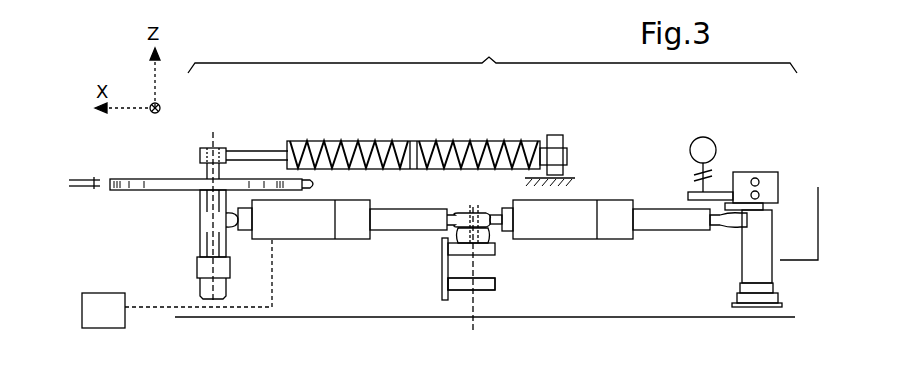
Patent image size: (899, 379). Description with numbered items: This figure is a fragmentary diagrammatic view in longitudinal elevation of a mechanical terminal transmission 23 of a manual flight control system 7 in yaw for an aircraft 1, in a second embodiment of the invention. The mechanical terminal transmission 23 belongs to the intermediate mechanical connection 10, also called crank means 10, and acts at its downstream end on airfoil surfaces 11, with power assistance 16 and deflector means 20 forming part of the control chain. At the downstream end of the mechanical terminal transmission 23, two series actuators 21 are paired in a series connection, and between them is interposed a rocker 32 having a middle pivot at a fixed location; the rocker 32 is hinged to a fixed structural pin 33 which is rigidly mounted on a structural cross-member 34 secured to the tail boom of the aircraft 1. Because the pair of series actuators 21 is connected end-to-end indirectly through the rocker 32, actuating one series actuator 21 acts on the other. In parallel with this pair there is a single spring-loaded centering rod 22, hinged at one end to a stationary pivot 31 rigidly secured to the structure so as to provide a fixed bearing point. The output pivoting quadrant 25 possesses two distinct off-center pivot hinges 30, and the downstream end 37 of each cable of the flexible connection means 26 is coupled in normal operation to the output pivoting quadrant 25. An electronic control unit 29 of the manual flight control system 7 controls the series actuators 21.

The aircraft 1 is at (290, 308).
The manual flight control system 7 is at (100, 155).
The intermediate mechanical connection 10 is at (173, 120).
The airfoil surface 11 is at (709, 150).
The power assistance 16 is at (797, 247).
The deflector means 20 is at (786, 164).
The series actuator 21 is at (300, 255).
The spring-loaded centering rod 22 is at (398, 124).
The mechanical terminal transmission 23 is at (492, 54).
The output pivoting quadrant 25 is at (178, 172).
The flexible connection means 26 is at (96, 189).
The electronic control unit 29 is at (177, 284).
The off-center pivot hinge 30 is at (197, 140).
The stationary pivot 31 is at (573, 172).
The rocker 32 is at (460, 233).
The fixed structural pin 33 is at (480, 265).
The structural cross-member 34 is at (458, 285).
The downstream end 37 is at (316, 184).